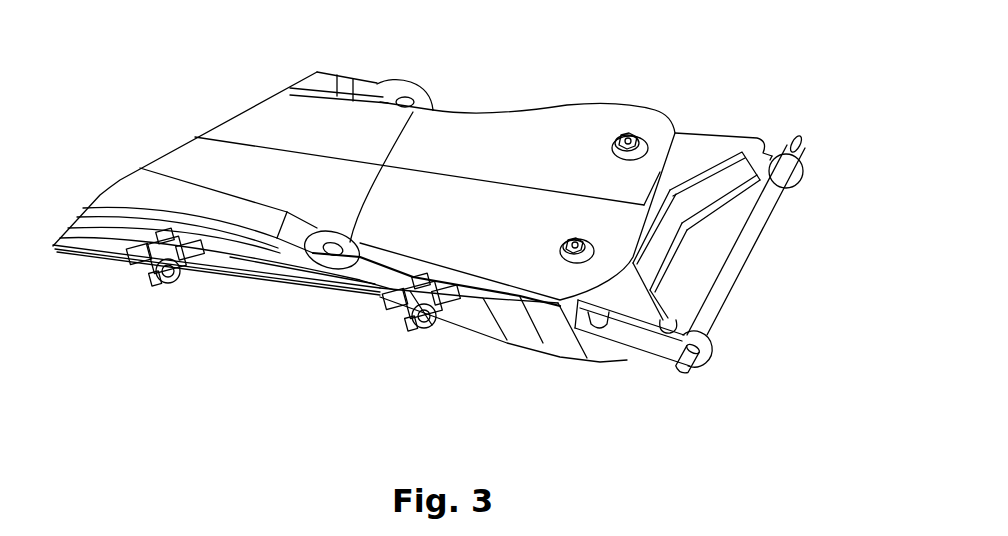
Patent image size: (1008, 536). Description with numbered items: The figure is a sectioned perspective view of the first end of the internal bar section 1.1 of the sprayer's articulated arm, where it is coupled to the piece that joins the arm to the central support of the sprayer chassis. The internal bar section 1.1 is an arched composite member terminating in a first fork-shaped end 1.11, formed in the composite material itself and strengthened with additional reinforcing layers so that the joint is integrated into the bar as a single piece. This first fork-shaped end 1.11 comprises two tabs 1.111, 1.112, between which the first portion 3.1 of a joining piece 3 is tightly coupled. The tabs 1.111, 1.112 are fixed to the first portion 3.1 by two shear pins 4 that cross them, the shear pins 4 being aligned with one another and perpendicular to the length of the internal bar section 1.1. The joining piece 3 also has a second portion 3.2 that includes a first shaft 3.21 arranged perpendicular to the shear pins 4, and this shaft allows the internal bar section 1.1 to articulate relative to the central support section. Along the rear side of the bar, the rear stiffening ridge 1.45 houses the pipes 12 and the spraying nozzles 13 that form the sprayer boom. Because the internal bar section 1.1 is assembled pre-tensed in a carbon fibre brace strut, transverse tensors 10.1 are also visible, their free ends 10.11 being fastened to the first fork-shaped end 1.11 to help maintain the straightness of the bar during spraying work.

The internal bar section 1.1 is at (242, 133).
The transverse tensors 10.1 is at (313, 80).
The free ends 10.11 is at (318, 238).
The first fork-shaped end 1.11 is at (553, 128).
The tab 1.111 is at (647, 122).
The shear pins 4 is at (574, 238).
The joining piece 3 is at (712, 145).
The first portion 3.1 is at (600, 333).
The second portion 3.2 is at (797, 173).
The first shaft 3.21 is at (745, 237).
The tab 1.112 is at (600, 350).
The pipes 12 is at (233, 248).
The rear stiffening ridge 1.45 is at (307, 270).
The spraying nozzles 13 is at (155, 270).